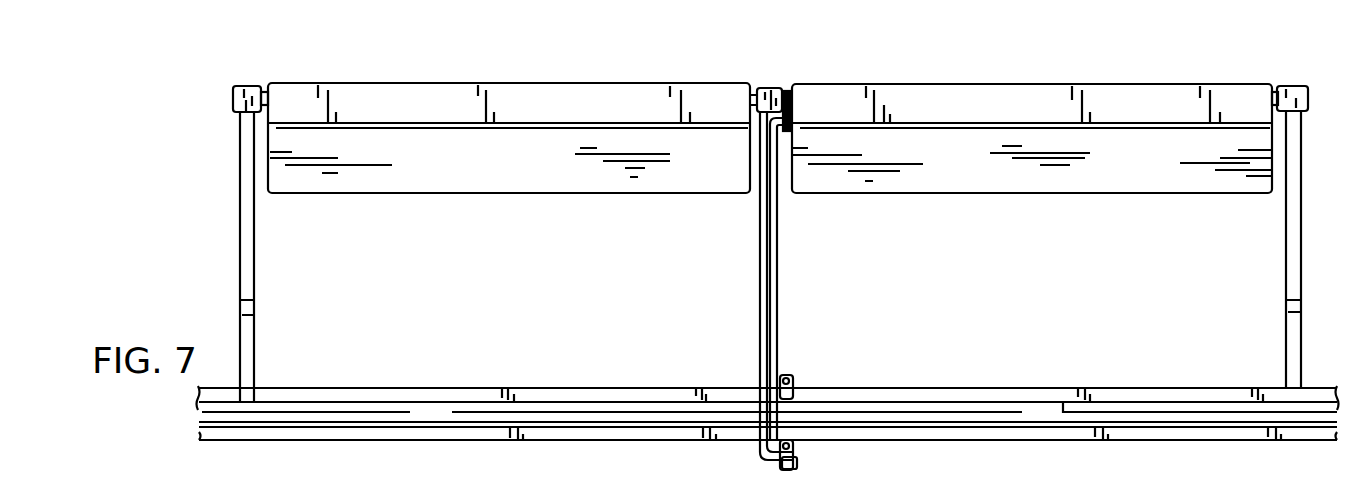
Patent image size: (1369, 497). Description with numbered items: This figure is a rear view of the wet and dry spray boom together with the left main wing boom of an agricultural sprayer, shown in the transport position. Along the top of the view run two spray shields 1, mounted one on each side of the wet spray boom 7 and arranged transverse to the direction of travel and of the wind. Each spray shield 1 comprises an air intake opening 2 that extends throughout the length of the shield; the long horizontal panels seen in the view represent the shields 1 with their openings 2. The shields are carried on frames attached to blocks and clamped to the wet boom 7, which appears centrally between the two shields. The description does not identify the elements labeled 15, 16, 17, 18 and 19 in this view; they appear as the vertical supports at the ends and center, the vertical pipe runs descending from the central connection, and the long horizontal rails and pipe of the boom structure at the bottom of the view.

The spray shield 1 is at (368, 203).
The air intake opening 2 is at (960, 115).
The wet spray boom 7 is at (752, 100).
The heat transfer fluid 15 is at (1083, 172).
The support post 16 is at (780, 210).
The vertical pipe 17 is at (762, 225).
The supply pipe 18 is at (1063, 402).
The base rail 19 is at (1142, 388).